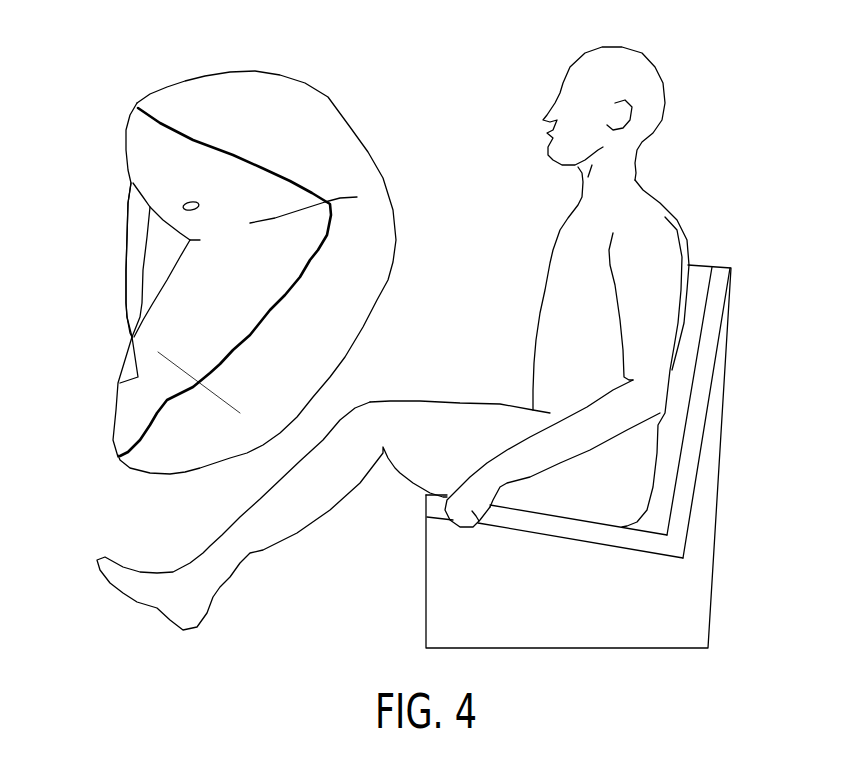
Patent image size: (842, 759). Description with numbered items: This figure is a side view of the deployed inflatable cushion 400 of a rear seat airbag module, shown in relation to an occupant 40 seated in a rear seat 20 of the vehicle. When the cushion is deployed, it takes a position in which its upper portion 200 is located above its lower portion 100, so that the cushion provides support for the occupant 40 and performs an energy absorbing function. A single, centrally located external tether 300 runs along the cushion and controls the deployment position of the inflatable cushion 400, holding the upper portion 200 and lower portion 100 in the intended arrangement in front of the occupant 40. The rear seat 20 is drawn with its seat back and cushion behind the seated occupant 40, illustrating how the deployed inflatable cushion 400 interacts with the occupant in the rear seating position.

The inflatable cushion 400 is at (80, 62).
The upper portion 200 is at (257, 255).
The lower portion 100 is at (222, 314).
The external tether 300 is at (114, 260).
The occupant 40 is at (393, 338).
The rear seat 20 is at (547, 607).